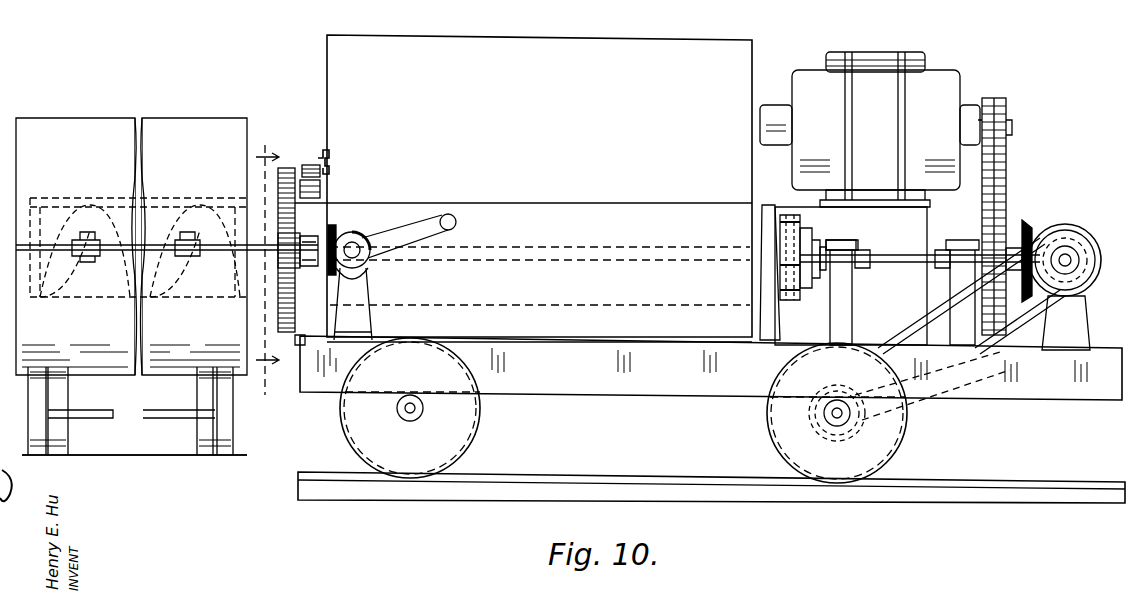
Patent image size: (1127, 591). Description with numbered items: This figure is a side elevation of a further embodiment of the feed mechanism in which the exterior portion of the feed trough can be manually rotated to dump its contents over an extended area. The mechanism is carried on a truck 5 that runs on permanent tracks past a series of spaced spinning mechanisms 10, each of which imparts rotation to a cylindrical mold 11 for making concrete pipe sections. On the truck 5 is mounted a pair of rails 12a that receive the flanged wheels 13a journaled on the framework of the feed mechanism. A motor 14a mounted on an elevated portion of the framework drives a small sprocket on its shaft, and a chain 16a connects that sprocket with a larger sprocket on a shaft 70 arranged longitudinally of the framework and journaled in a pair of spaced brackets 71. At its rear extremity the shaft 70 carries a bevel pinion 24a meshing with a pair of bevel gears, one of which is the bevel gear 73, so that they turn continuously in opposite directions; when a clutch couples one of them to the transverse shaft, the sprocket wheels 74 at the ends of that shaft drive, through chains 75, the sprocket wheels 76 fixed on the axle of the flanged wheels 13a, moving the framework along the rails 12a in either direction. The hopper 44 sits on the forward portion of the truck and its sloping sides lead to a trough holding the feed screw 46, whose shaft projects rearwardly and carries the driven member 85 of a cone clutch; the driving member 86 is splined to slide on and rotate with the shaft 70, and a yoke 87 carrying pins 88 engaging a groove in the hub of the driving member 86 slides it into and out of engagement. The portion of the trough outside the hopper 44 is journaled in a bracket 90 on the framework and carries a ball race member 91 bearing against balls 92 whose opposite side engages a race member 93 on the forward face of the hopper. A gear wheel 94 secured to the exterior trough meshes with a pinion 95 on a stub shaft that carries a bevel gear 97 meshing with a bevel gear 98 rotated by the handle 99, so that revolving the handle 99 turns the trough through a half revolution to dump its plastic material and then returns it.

The truck 5 is at (1090, 395).
The spinning mechanism 10 is at (208, 457).
The cylindrical mold 11 is at (88, 124).
The rails 12a is at (570, 482).
The flanged wheels 13a is at (468, 437).
The motor 14a is at (918, 62).
The chain 16a is at (1000, 180).
The bevel pinion 24a is at (1028, 220).
The hopper 44 is at (646, 60).
The feed screw 46 is at (640, 252).
The shaft 70 is at (884, 258).
The brackets 71 is at (965, 282).
The bevel gear 73 is at (1086, 226).
The sprocket wheels 74 is at (1085, 296).
The chains 75 is at (1025, 350).
The sprocket wheels 76 is at (850, 405).
The driven member of cone clutch 85 is at (782, 226).
The driving member of cone clutch 86 is at (820, 250).
The yoke 87 is at (818, 285).
The pins 88 is at (845, 245).
The bracket 90 is at (293, 340).
The ball race member 91 is at (320, 194).
The balls 92 is at (320, 184).
The race member 93 is at (322, 172).
The gear wheel 94 is at (284, 335).
The pinion 95 is at (278, 268).
The bevel gear 97 is at (336, 236).
The bevel gear 98 is at (361, 241).
The handle 99 is at (436, 218).